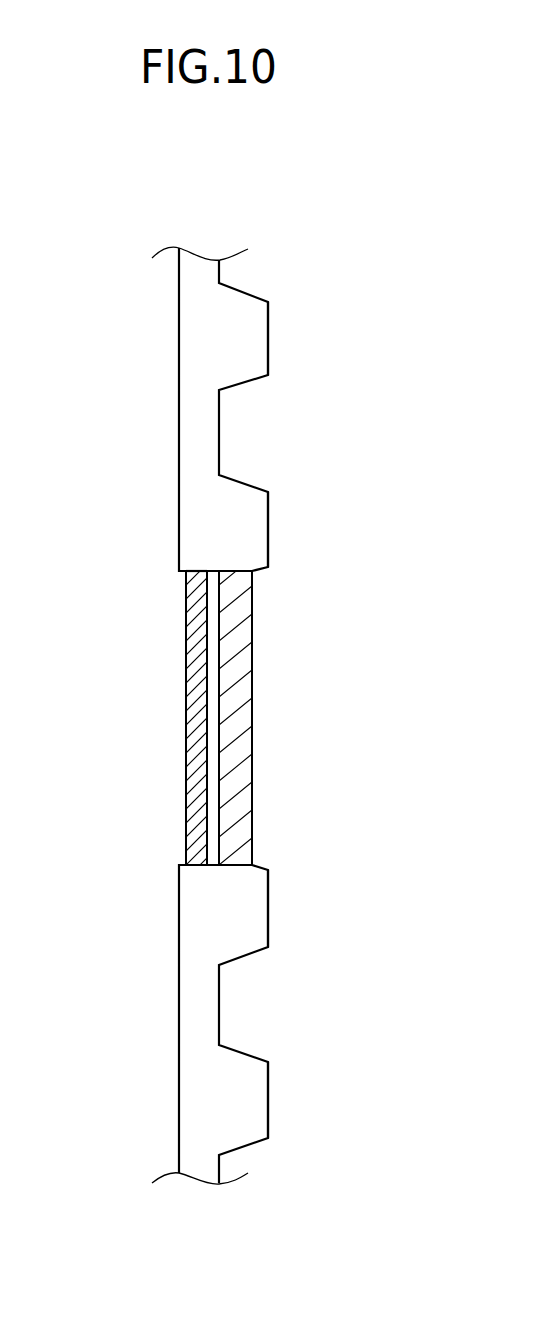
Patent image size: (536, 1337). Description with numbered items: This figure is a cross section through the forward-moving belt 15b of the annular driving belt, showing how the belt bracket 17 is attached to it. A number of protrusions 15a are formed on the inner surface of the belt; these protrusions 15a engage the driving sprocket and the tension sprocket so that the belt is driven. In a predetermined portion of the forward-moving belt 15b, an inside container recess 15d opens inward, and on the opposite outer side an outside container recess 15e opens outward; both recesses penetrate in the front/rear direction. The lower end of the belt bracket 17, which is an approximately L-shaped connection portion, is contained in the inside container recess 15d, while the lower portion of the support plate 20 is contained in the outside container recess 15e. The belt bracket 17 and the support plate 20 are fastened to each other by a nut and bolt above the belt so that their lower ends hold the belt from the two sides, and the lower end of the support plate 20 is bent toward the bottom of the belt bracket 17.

The protrusions 15a is at (245, 338).
The forward-moving belt 15b is at (198, 270).
The inside container recess 15d is at (233, 863).
The outside container recess 15e is at (186, 589).
The belt bracket 17 is at (242, 703).
The support plate 20 is at (190, 710).